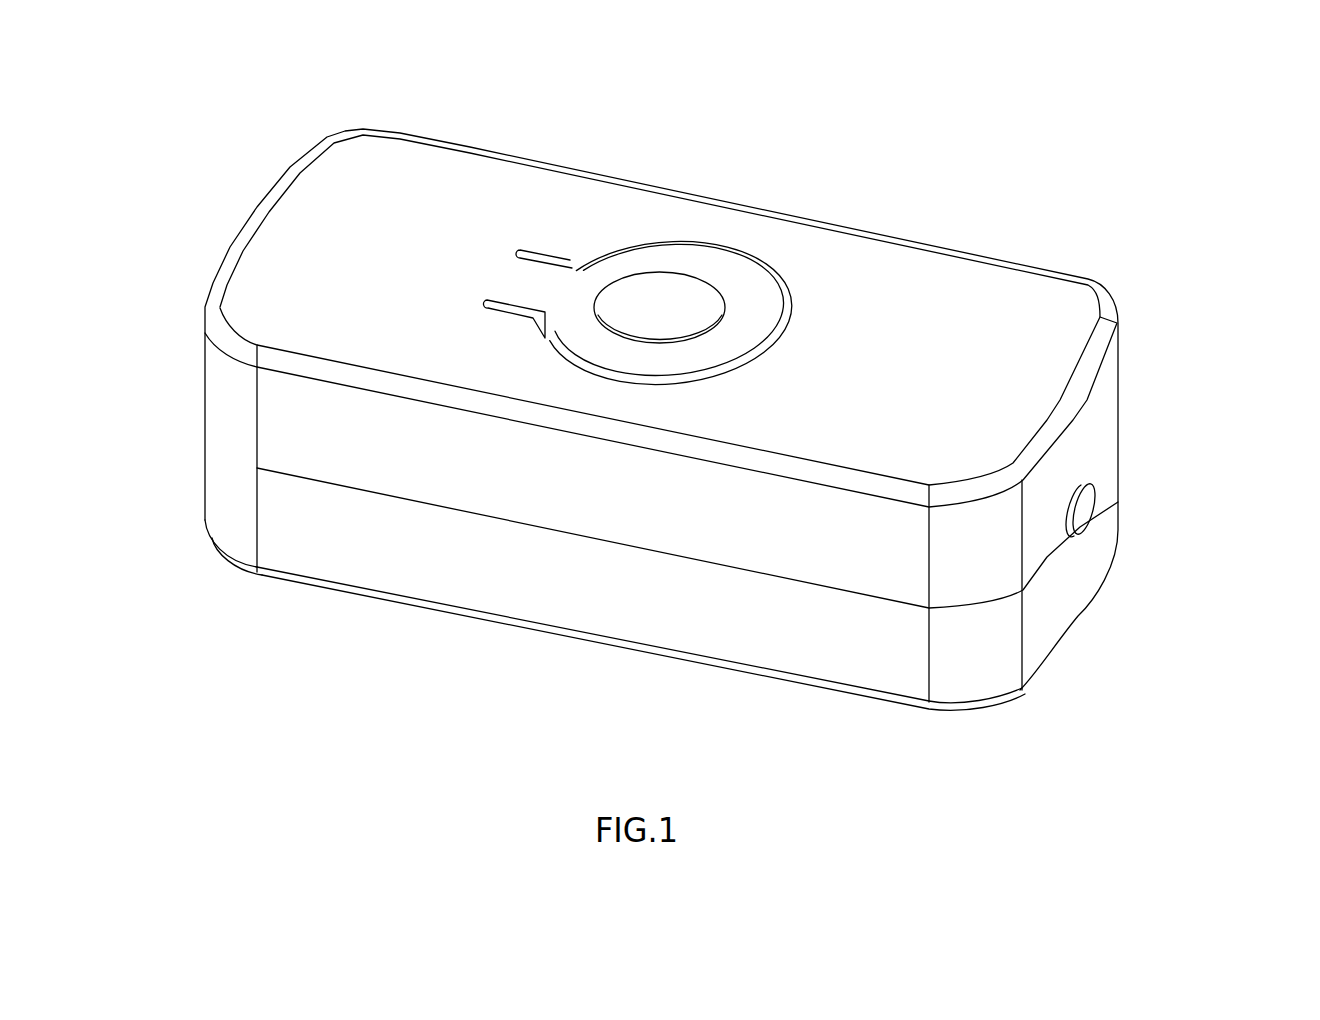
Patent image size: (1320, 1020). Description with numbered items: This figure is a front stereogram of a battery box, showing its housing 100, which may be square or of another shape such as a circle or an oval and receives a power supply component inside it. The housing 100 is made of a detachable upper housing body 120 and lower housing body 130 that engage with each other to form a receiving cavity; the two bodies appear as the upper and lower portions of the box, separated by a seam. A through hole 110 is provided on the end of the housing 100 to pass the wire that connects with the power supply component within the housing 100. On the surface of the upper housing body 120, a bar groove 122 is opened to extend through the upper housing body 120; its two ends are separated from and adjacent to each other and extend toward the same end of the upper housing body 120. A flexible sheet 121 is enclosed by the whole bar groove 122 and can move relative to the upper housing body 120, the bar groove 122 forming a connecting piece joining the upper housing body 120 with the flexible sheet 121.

The housing 100 is at (707, 381).
The through hole 110 is at (1093, 508).
The upper housing body 120 is at (1103, 410).
The flexible sheet 121 is at (657, 290).
The bar groove 122 is at (786, 325).
The lower housing body 130 is at (1078, 603).